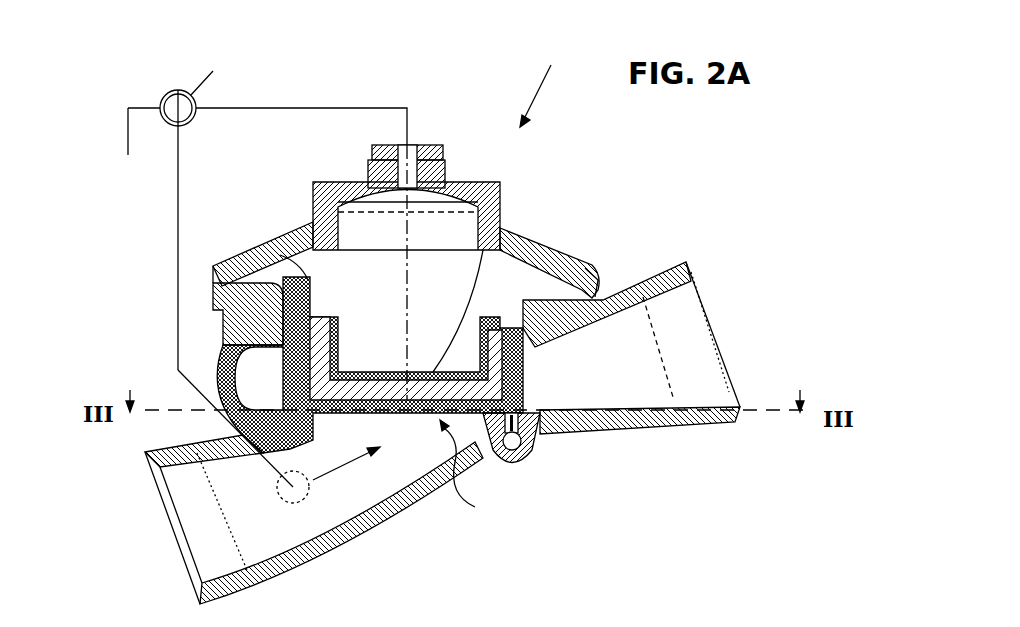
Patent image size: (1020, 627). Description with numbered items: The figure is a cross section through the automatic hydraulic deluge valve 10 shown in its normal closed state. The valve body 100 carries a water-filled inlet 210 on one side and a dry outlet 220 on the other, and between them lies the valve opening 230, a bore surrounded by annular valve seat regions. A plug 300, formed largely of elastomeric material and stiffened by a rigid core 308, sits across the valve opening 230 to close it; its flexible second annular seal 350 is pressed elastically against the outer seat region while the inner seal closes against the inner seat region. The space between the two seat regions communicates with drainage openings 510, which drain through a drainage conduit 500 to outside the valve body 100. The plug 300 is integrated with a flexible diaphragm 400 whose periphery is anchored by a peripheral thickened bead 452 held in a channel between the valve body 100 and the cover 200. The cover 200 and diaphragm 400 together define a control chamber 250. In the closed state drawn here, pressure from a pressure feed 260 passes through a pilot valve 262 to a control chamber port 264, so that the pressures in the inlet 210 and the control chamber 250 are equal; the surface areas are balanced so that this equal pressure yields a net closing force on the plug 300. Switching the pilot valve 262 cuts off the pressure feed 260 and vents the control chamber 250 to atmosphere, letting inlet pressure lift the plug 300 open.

The valve 10 is at (546, 78).
The valve body 100 is at (228, 357).
The cover 200 is at (465, 182).
The inlet 210 is at (180, 523).
The outlet 220 is at (713, 353).
The valve opening 230 is at (487, 479).
The control chamber 250 is at (307, 278).
The pressure feed 260 is at (305, 497).
The pilot valve 262 is at (166, 93).
The control chamber port 264 is at (410, 146).
The plug 300 is at (513, 233).
The rigid core 308 is at (583, 265).
The second annular seal 350 is at (527, 410).
The diaphragm 400 is at (223, 307).
The peripheral thickened bead 452 is at (213, 268).
The drainage conduit 500 is at (530, 468).
The drainage openings 510 is at (540, 443).